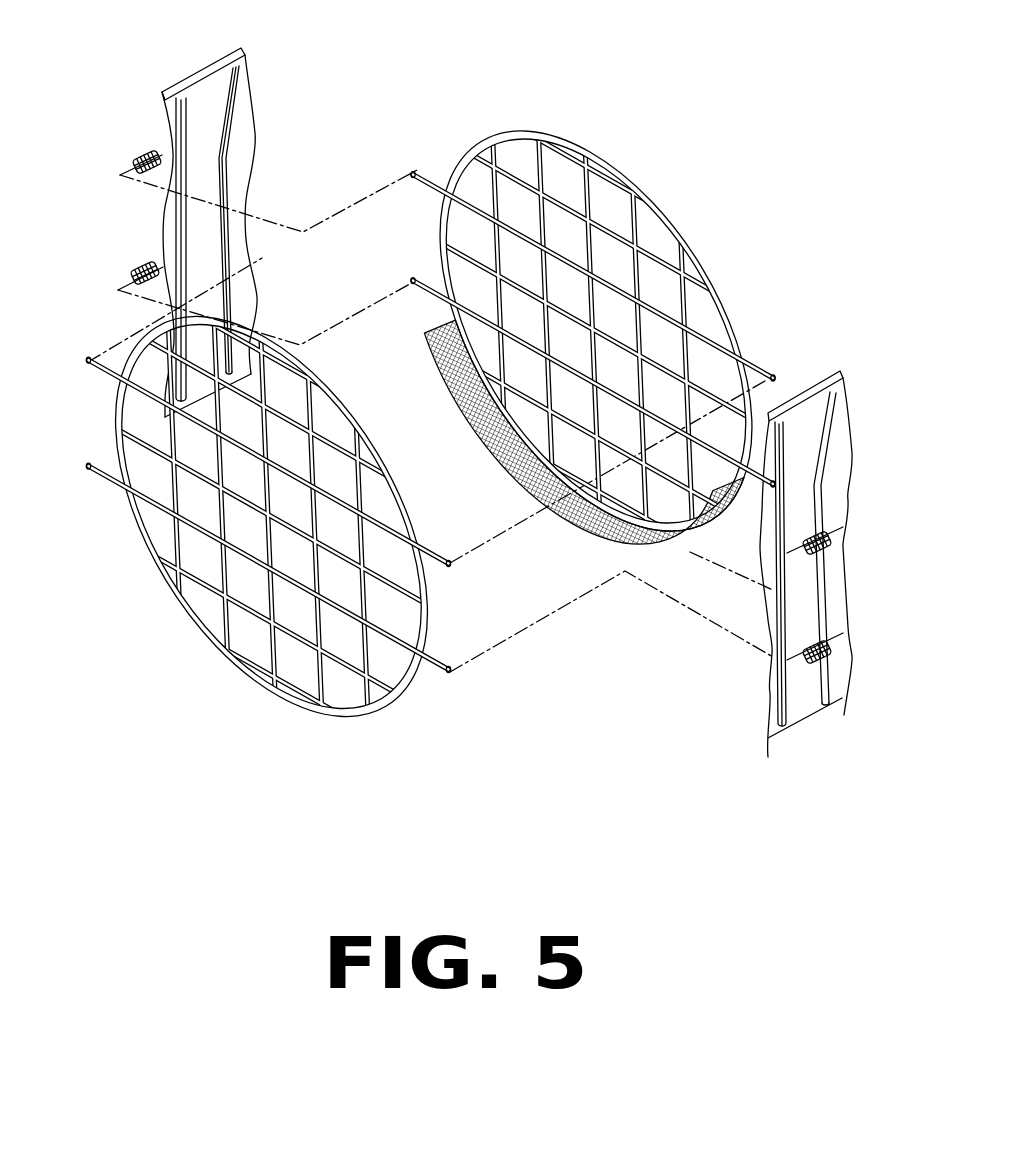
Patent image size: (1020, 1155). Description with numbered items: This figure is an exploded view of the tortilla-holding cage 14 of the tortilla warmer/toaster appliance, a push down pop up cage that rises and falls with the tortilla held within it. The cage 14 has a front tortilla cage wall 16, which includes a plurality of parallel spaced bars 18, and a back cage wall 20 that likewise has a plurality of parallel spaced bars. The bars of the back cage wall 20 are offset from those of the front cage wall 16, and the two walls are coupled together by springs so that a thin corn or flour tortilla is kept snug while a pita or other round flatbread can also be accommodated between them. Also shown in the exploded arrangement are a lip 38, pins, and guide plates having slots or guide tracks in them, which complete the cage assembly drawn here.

The tortilla-holding cage 14 is at (556, 302).
The front tortilla cage wall 16 is at (271, 517).
The parallel spaced bars 18 is at (272, 517).
The back cage wall 20 is at (596, 299).
The lip 38 is at (482, 447).